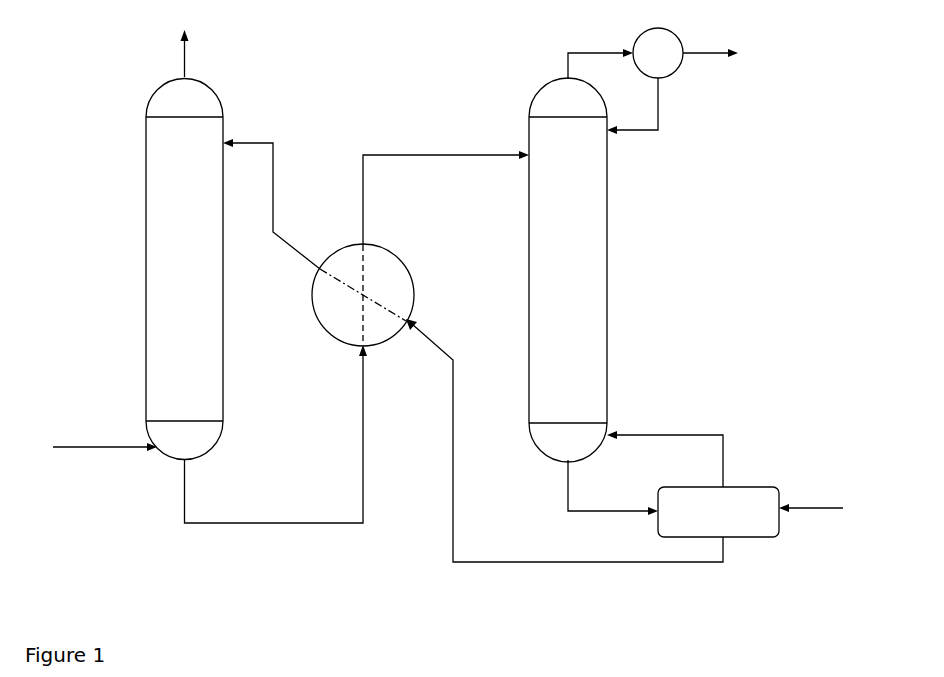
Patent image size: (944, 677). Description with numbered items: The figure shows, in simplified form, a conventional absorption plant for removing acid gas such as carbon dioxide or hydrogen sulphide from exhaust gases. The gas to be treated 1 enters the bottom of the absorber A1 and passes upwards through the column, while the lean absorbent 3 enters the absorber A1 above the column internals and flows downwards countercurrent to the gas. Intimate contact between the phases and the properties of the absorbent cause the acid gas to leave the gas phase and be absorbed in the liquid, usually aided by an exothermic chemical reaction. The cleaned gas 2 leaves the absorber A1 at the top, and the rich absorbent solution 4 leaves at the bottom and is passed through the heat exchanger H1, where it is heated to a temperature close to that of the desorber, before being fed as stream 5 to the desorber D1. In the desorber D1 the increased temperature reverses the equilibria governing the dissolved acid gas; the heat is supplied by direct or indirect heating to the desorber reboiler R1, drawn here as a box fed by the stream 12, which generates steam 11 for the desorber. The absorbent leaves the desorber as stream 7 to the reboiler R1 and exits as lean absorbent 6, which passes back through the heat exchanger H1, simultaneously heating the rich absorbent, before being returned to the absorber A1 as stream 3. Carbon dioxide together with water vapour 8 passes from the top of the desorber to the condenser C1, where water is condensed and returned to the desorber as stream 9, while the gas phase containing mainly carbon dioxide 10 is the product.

The gas to be treated 1 is at (105, 459).
The cleaned gas 2 is at (192, 54).
The lean absorbent 3 is at (271, 204).
The rich absorbent solution 4 is at (276, 434).
The heated rich absorbent stream 5 is at (446, 190).
The lean absorbent from reboiler 6 is at (564, 440).
The absorbent stream leaving desorber 7 is at (605, 487).
The CO2 and water vapour 8 is at (600, 56).
The condensed water returned to desorber 9 is at (639, 106).
The CO2 product gas phase 10 is at (710, 45).
The steam 11 is at (665, 450).
The reactant feed stream to reactor R1 12 is at (811, 499).
The absorber A1 is at (184, 268).
The desorber D1 is at (568, 270).
The heat exchanger H1 is at (363, 295).
The condenser C1 is at (658, 53).
The desorber reboiler R1 is at (718, 512).